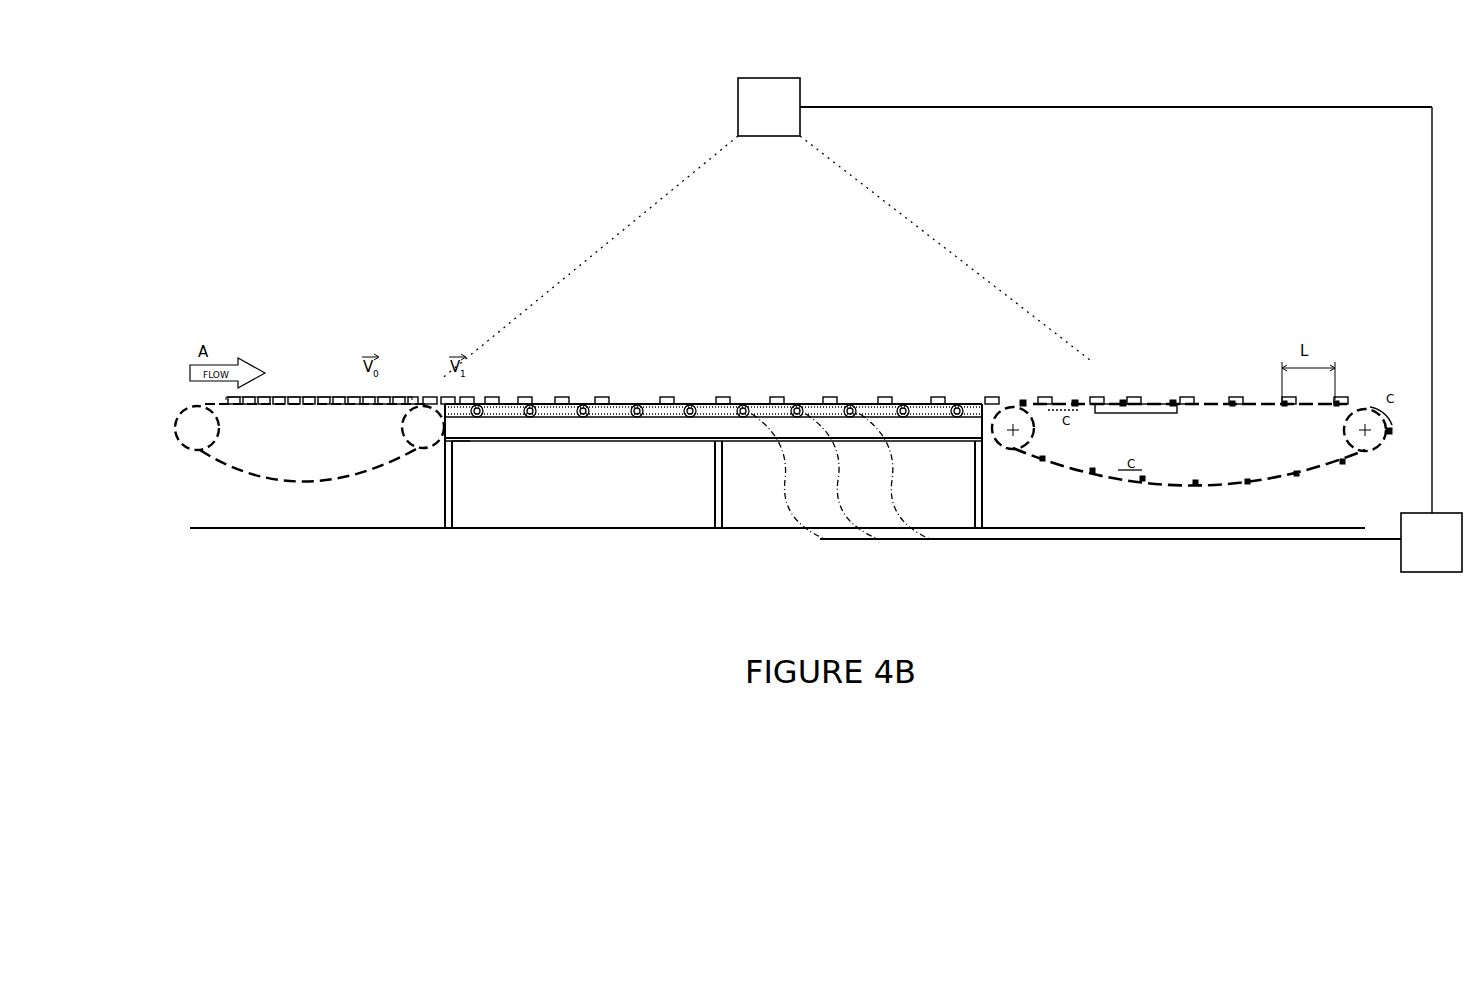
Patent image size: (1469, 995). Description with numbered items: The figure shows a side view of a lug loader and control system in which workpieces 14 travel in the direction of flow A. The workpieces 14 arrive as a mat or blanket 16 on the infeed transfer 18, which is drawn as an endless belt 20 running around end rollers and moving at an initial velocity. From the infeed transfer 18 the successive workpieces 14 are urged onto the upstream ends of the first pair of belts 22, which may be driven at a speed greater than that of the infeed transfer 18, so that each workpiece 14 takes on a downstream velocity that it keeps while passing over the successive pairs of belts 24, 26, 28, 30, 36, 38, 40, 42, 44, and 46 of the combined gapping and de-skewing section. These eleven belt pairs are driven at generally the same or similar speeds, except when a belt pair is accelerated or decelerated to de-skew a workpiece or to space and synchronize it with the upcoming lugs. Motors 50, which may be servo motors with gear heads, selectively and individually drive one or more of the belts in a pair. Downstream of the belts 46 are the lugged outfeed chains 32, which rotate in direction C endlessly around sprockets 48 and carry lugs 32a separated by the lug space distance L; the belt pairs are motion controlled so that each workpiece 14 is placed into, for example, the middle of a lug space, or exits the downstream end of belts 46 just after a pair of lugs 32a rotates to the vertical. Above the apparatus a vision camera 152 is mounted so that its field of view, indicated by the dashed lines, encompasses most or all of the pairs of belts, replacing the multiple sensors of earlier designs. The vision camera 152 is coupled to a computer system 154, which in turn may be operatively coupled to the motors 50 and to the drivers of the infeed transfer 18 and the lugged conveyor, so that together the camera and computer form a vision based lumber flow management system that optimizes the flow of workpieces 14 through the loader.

The workpieces 14 is at (1345, 392).
The mat or blanket 16 is at (338, 397).
The infeed transfer 18 is at (333, 346).
The infeed conveyor belt 20 is at (395, 468).
The first pair of belts 22 is at (460, 443).
The pair of belts 24 is at (508, 410).
The pair of belts 26 is at (550, 410).
The pair of belts 28 is at (620, 410).
The pair of belts 30 is at (665, 410).
The lugged outfeed chains 32 is at (1272, 478).
The lugs 32a is at (1030, 393).
The pair of belts 36 is at (710, 404).
The pair of belts 38 is at (766, 404).
The pair of belts 40 is at (818, 404).
The pair of belts 42 is at (872, 404).
The pair of belts 44 is at (924, 404).
The pair of belts 46 is at (978, 404).
The sprockets 48 is at (1030, 446).
The motors 50 is at (743, 417).
The vision camera 152 is at (784, 115).
The computer system 154 is at (1447, 551).